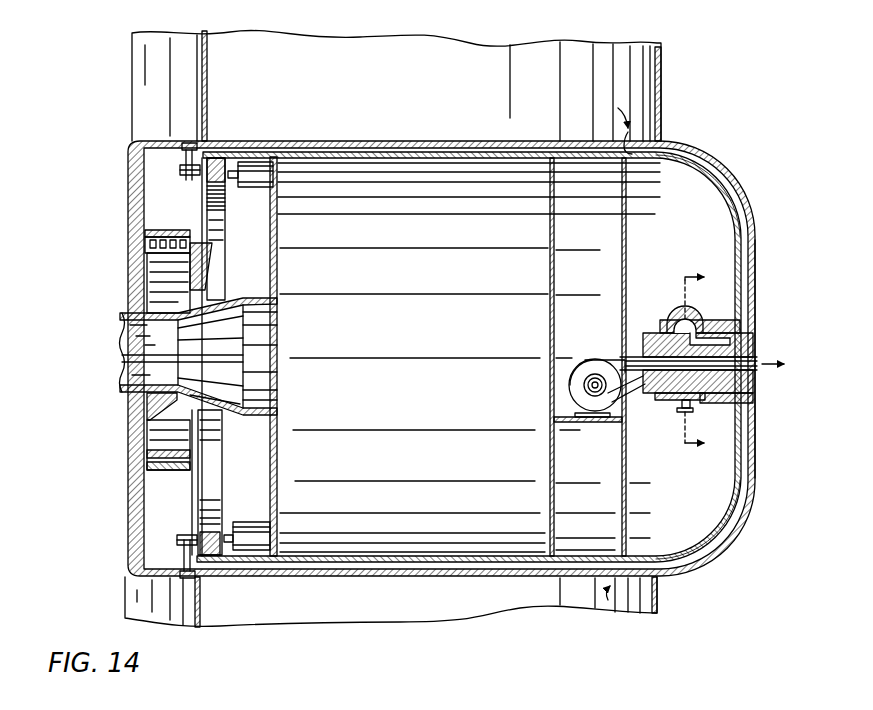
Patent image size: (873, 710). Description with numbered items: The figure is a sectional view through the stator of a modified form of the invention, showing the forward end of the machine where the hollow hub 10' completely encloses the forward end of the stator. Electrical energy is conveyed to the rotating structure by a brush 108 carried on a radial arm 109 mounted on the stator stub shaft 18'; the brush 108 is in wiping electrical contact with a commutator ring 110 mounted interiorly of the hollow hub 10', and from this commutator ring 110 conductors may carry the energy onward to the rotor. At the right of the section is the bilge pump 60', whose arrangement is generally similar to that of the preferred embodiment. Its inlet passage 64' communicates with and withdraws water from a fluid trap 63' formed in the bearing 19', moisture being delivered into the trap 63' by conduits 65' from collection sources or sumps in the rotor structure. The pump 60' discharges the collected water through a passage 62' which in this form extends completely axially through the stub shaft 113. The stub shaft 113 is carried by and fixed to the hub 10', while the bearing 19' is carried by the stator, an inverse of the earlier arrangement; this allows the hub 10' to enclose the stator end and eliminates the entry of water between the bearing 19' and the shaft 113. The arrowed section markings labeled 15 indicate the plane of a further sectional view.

The hollow hub 10' is at (441, 338).
The brush 108 is at (180, 231).
The radial arm 109 is at (208, 268).
The commutator ring 110 is at (163, 262).
The stator stub shaft 18' is at (199, 384).
The stub shaft 113 is at (644, 333).
The bearing 19' is at (700, 311).
The fluid trap 63' is at (689, 317).
The passage 62' is at (707, 354).
The conduits 65' is at (774, 359).
The bilge pump 60' is at (589, 374).
The inlet passage 64' is at (633, 406).
The section line 15 is at (706, 362).